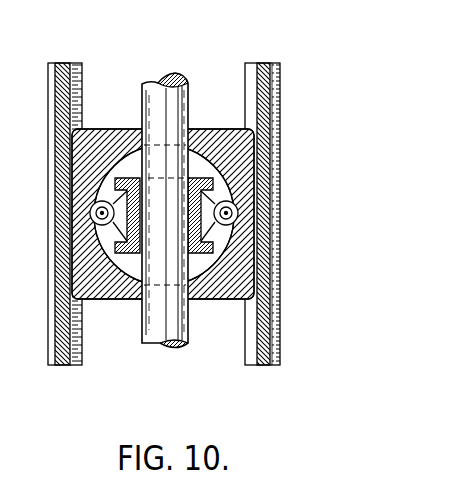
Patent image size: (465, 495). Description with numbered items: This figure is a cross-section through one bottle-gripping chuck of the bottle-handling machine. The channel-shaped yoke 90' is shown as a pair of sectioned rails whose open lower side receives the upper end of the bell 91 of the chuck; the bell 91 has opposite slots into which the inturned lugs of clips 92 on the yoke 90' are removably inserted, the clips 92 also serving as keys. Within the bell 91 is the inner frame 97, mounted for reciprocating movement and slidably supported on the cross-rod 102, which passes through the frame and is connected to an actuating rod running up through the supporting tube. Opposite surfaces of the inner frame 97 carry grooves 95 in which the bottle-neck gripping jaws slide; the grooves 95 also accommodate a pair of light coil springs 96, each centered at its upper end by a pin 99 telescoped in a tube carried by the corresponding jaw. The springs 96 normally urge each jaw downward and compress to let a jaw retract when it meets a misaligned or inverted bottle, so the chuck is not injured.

The channel-shaped yoke 90' is at (265, 194).
The bell 91 is at (99, 292).
The clip 92 is at (281, 135).
The groove 95 is at (228, 190).
The light coil spring 96 is at (238, 217).
The inner frame 97 is at (207, 280).
The pin 99 is at (90, 213).
The cross-rod 102 is at (180, 72).